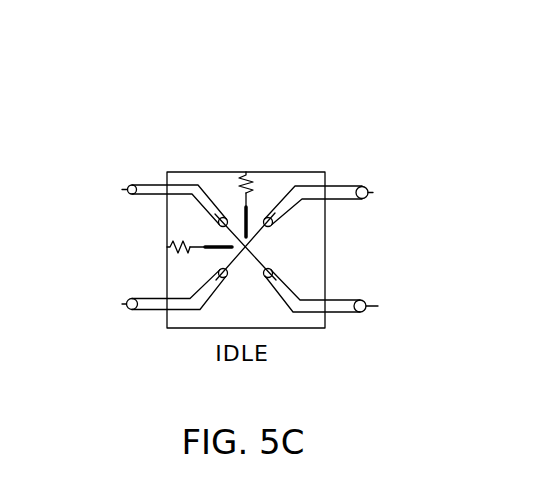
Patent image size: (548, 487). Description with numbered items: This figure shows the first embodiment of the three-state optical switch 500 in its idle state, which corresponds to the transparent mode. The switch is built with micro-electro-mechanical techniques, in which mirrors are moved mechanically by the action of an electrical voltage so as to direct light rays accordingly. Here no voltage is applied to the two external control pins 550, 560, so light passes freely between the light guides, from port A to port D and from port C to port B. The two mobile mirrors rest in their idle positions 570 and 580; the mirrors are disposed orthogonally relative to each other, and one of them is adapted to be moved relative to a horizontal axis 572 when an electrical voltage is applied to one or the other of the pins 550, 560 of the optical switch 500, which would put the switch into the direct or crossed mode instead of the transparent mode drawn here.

The three-state optical switch 500 is at (201, 158).
The control pin 550 is at (125, 246).
The control pin 560 is at (262, 148).
The idle position of mobile mirror 570 is at (193, 246).
The horizontal axis 572 is at (260, 248).
The idle position of mobile mirror 580 is at (250, 215).